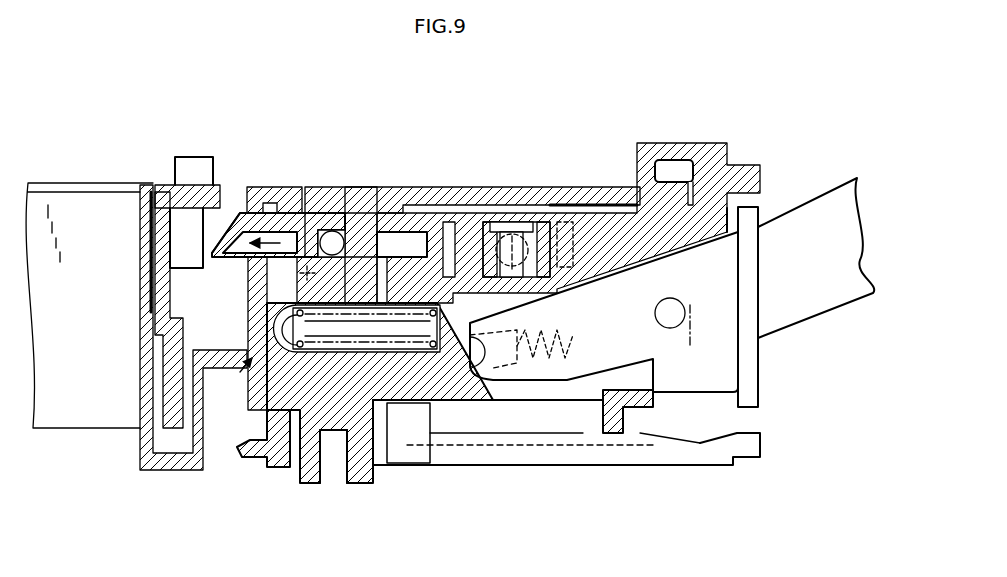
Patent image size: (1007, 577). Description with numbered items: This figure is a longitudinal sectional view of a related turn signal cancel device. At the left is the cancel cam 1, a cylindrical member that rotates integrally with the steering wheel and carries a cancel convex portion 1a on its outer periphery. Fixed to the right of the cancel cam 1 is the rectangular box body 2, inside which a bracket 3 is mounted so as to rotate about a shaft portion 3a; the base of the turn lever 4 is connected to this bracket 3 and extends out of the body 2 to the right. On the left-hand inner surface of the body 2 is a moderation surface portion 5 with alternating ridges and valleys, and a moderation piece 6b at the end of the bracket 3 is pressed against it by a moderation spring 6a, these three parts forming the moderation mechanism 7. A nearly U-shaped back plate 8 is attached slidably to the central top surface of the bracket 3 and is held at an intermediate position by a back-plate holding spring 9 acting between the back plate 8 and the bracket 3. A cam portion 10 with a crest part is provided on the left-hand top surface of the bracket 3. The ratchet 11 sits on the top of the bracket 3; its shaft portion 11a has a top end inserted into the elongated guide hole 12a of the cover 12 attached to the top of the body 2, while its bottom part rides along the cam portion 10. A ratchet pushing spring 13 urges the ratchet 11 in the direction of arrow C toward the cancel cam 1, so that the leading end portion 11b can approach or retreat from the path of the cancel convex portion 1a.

The cancel cam 1 is at (162, 185).
The cancel convex portion 1a is at (187, 227).
The body 2 is at (278, 413).
The bracket 3 is at (473, 397).
The shaft portion 3a is at (672, 163).
The turn lever 4 is at (813, 205).
The moderation surface portion 5 is at (260, 427).
The moderation spring 6a is at (403, 407).
The moderation piece 6b is at (330, 430).
The moderation mechanism 7 is at (237, 363).
The back plate 8 is at (507, 247).
The back-plate holding spring 9 is at (532, 240).
The cam portion 10 is at (290, 273).
The ratchet 11 is at (308, 225).
The shaft portion 11a is at (372, 232).
The leading end portion 11b is at (207, 243).
The cover 12 is at (467, 193).
The guide hole 12a is at (345, 235).
The ratchet pushing spring 13 is at (330, 230).
The arrow C is at (268, 250).